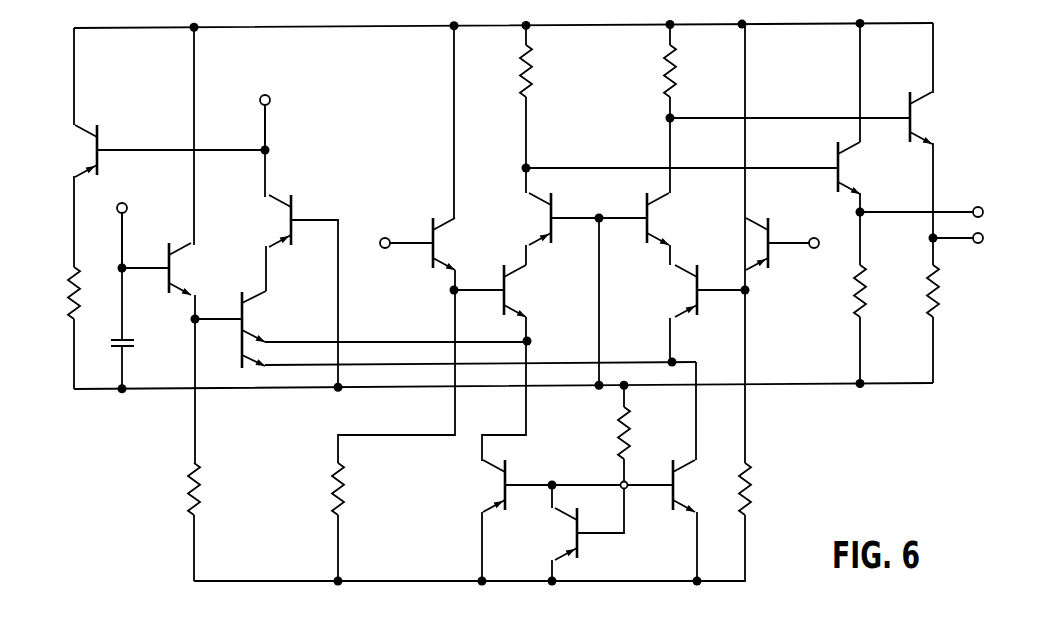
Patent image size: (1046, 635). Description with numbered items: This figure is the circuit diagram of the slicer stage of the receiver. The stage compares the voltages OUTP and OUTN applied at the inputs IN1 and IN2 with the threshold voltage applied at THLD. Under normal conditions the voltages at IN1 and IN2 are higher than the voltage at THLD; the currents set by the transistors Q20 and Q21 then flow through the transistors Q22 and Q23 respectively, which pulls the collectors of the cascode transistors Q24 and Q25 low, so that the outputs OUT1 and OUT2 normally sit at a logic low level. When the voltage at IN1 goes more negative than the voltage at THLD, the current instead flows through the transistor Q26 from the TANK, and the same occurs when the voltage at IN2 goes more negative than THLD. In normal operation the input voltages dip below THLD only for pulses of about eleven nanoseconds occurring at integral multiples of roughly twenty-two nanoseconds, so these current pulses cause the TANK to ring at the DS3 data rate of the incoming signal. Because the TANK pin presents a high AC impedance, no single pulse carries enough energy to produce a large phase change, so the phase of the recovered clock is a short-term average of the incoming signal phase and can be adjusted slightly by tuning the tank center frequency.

The transistor Q20 is at (507, 486).
The transistor Q21 is at (694, 486).
The transistor Q22 is at (505, 291).
The transistor Q23 is at (700, 291).
The cascode transistor Q24 is at (578, 219).
The cascode transistor Q25 is at (673, 219).
The transistor Q26 is at (245, 329).
The tank TANK is at (267, 110).
The threshold voltage input THLD is at (134, 222).
The input IN1 is at (415, 240).
The input IN2 is at (788, 240).
The output OUT1 is at (927, 198).
The output OUT2 is at (964, 251).